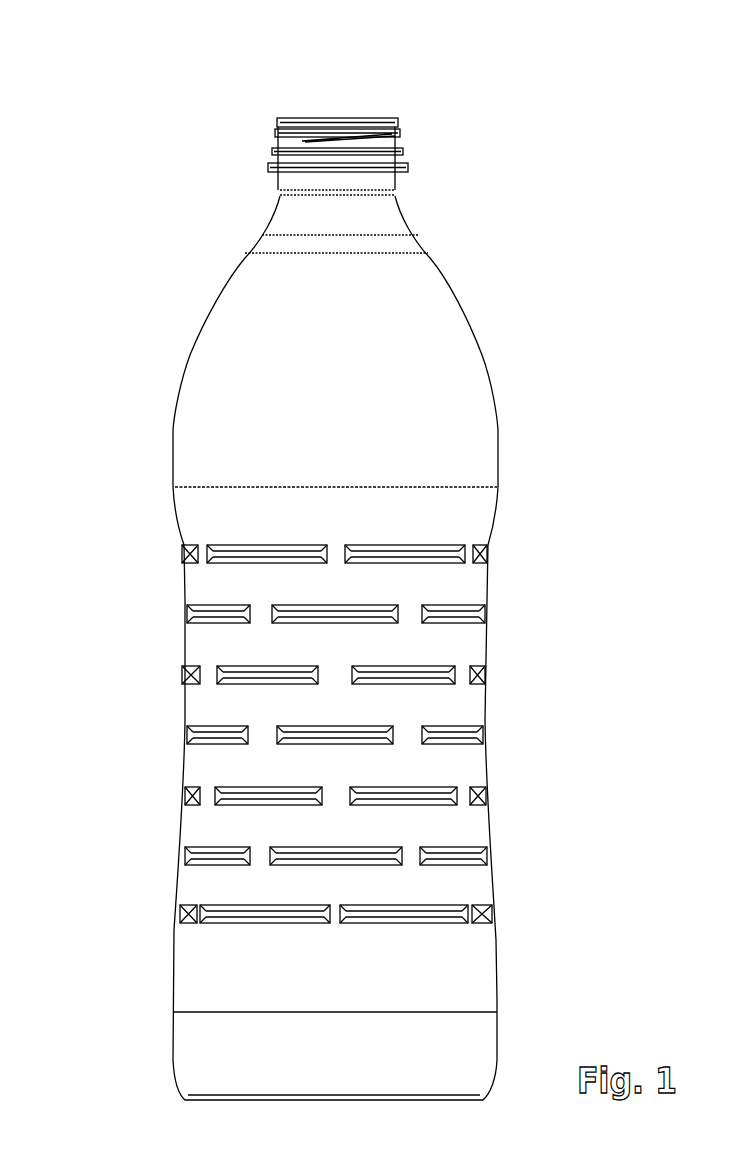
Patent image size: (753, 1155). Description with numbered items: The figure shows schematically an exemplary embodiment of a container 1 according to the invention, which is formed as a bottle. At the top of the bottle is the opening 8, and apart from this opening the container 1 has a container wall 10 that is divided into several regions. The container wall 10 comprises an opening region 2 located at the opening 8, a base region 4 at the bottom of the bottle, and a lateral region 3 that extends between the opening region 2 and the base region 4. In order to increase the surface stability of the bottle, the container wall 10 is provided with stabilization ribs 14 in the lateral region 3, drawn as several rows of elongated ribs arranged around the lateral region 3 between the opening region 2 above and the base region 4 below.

The container 1 is at (356, 550).
The opening region 2 is at (168, 190).
The lateral region 3 is at (321, 734).
The base region 4 is at (135, 1053).
The opening 8 is at (335, 113).
The container wall 10 is at (445, 420).
The stabilization ribs 14 is at (360, 610).